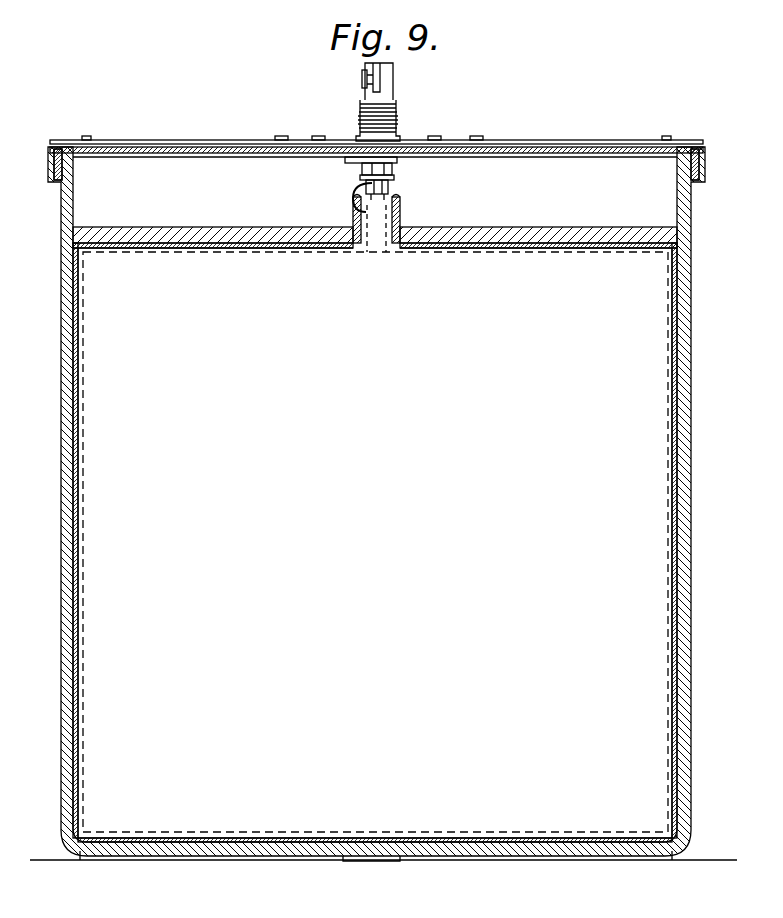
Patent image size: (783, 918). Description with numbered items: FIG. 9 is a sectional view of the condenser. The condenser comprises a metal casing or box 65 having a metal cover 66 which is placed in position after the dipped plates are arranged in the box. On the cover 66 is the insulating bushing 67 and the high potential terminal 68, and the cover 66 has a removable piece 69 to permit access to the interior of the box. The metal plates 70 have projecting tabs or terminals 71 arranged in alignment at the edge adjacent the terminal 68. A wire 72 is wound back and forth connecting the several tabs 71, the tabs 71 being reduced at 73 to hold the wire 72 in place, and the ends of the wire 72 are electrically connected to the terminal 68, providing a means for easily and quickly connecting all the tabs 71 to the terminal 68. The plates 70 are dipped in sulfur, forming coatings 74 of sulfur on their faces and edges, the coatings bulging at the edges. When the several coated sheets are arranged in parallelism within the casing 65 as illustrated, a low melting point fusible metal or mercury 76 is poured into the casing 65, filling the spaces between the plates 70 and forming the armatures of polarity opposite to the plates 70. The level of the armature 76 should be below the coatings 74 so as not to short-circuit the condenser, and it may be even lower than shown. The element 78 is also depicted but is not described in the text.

The metal casing 65 is at (690, 497).
The metal cover 66 is at (540, 147).
The insulating bushing 67 is at (398, 118).
The high potential terminal 68 is at (395, 88).
The removable piece 69 is at (160, 140).
The metal plates 70 is at (650, 375).
The projecting tabs 71 is at (393, 200).
The wire 72 is at (353, 190).
The reduced portion 73 is at (376, 245).
The sulfur coatings 74 is at (237, 246).
The fusible metal 76 is at (490, 226).
The cup 78 is at (355, 212).